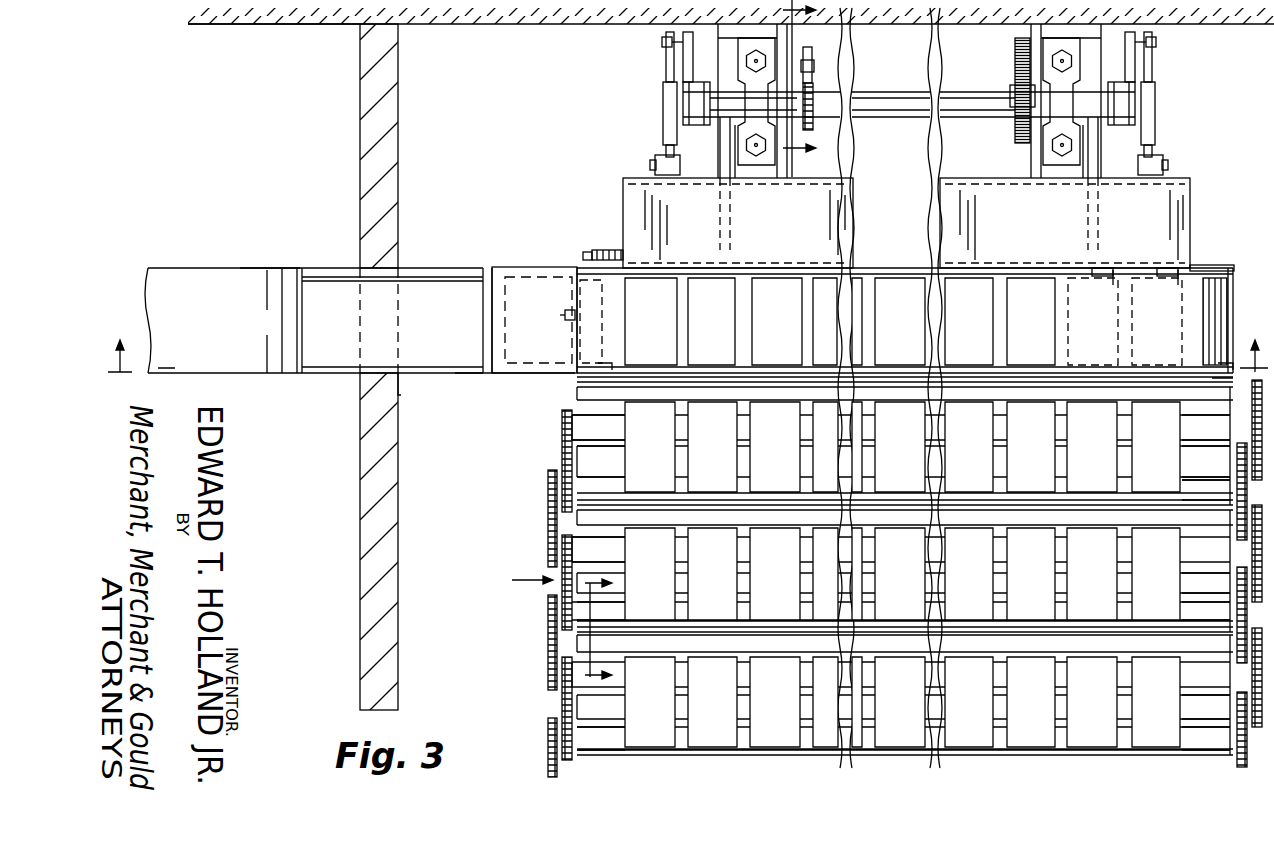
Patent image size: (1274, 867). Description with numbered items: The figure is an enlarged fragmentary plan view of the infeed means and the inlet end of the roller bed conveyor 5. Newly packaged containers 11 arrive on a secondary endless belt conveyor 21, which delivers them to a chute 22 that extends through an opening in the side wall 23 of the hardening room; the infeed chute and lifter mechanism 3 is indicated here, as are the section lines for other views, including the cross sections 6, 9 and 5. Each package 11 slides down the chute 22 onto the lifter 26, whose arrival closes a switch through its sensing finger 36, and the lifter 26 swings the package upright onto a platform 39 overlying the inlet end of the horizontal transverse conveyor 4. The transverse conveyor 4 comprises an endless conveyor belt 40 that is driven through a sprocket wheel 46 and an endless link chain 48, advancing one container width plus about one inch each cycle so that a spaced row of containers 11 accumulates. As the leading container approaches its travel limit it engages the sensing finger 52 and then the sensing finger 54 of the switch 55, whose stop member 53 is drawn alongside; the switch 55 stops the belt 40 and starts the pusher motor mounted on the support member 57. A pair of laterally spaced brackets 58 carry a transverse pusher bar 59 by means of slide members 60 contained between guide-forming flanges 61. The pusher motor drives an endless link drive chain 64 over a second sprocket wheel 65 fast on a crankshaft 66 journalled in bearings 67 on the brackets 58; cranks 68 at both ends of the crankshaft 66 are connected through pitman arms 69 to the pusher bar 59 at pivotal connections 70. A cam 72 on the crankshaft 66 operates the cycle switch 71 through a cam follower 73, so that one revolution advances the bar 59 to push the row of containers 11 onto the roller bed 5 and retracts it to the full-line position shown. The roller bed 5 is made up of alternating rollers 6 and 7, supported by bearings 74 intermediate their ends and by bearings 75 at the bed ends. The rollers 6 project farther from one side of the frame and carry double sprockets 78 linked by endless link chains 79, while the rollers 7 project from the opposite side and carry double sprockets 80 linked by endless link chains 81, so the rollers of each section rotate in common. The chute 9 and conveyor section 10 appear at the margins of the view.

The infeed chute and lifter mechanism 3 is at (470, 377).
The horizontal transverse conveyor 4 is at (1236, 274).
The main roller bed 5 is at (566, 629).
The rollers 6 is at (688, 512).
The alternate rollers 7 is at (598, 583).
The chute 9 is at (809, 88).
The conveyor system 10 is at (225, 270).
The containers 11 is at (1000, 552).
The secondary endless belt conveyor 21 is at (186, 295).
The chute 22 is at (445, 282).
The side wall 23 is at (397, 184).
The lifter 26 is at (528, 295).
The sensing finger 36 is at (568, 311).
The platform 39 is at (613, 326).
The endless conveyor belt 40 is at (998, 280).
The sprocket wheel 46 is at (600, 250).
The endless link chain 48 is at (590, 253).
The sensing finger 52 is at (1116, 280).
The stop member 53 is at (1101, 272).
The sensing finger 54 is at (1180, 280).
The switch 55 is at (1166, 272).
The support member 57 is at (560, 27).
The brackets 58 is at (810, 172).
The pusher bar 59 is at (906, 223).
The slide members 60 is at (725, 180).
The guide-forming flanges 61 is at (714, 170).
The endless link drive chain 64 is at (1015, 40).
The second sprocket wheel 65 is at (1015, 63).
The crankshaft 66 is at (948, 117).
The bearings 67 is at (748, 82).
The cranks 68 is at (665, 48).
The pitman arms 69 is at (665, 90).
The pivotal connection 70 is at (657, 163).
The cycle switch 71 is at (812, 48).
The cam 72 is at (813, 98).
The cam follower 73 is at (813, 70).
The bearings 74 is at (597, 452).
The bearings 75 is at (605, 366).
The double sprockets 78 is at (1250, 458).
The endless link chains 79 is at (1250, 482).
The double sprockets 80 is at (560, 470).
The endless link chains 81 is at (548, 522).